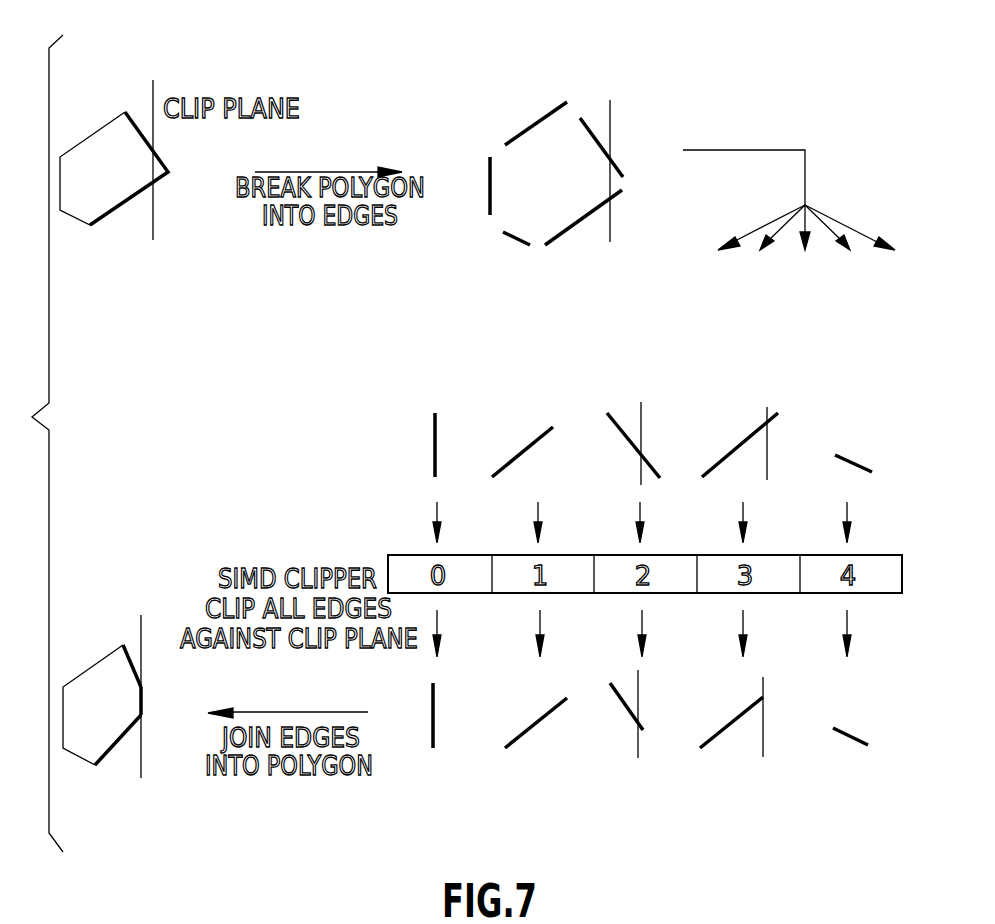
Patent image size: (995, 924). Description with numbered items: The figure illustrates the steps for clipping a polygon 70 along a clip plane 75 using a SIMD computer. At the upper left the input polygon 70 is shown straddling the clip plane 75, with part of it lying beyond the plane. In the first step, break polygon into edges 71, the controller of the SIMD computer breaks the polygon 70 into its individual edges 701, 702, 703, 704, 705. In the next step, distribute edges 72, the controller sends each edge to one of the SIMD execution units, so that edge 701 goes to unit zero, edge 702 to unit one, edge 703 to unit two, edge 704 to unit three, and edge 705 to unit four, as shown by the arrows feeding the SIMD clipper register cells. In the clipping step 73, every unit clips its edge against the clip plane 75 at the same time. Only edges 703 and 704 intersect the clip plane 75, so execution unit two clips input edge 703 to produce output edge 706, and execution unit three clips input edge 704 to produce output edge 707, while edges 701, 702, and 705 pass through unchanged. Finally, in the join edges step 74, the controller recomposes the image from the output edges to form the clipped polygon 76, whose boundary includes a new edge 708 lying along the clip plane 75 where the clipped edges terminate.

The polygon 70 is at (110, 178).
The break polygon into edges step 71 is at (280, 172).
The distribute edges step 72 is at (752, 150).
The clip edges step 73 is at (140, 633).
The recompose polygon step 74 is at (293, 712).
The clip plane 75 is at (153, 105).
The output polygon 76 is at (111, 717).
The edge 701 is at (487, 193).
The edge 702 is at (545, 112).
The edge 703 is at (590, 127).
The edge 704 is at (570, 230).
The edge 705 is at (520, 240).
The output edge 706 is at (630, 715).
The output edge 707 is at (730, 725).
The new edge along clip plane 708 is at (142, 707).